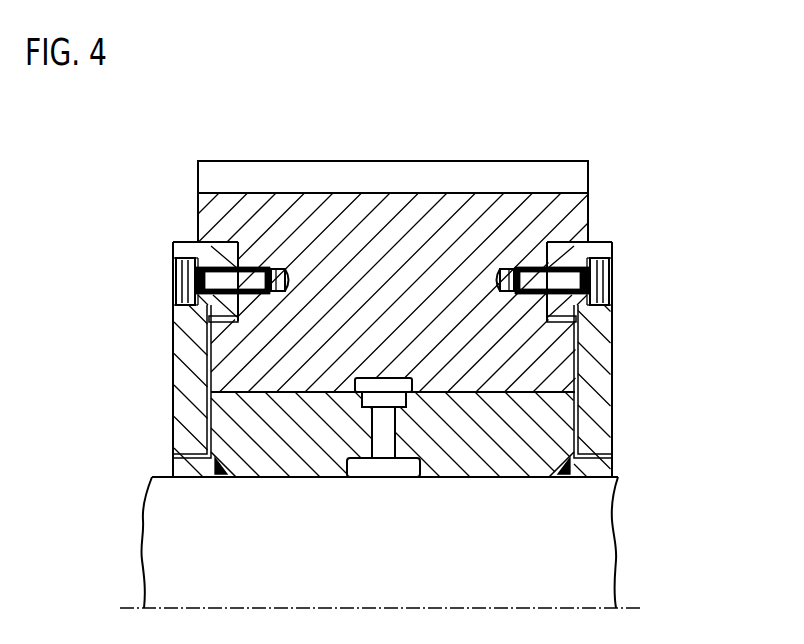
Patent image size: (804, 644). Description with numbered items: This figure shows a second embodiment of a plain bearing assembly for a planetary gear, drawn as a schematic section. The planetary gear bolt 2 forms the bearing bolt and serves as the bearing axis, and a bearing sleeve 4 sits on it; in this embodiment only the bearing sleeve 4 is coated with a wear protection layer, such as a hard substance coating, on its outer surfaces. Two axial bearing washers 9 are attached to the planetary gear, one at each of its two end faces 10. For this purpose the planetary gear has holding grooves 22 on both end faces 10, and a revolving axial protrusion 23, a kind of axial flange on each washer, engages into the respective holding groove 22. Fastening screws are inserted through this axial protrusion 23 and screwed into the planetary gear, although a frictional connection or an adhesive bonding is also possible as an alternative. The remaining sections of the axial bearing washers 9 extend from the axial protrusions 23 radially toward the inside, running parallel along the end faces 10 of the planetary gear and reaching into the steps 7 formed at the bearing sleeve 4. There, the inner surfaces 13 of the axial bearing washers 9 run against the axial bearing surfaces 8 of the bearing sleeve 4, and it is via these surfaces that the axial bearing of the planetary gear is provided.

The planetary gear bolt 2 is at (578, 553).
The bearing sleeve 4 is at (323, 462).
The step 7 is at (219, 458).
The axial bearing surface 8 is at (234, 455).
The axial bearing washer 9 is at (188, 348).
The end face 10 is at (197, 229).
The inner surface 13 is at (204, 410).
The holding groove 22 is at (243, 253).
The axial protrusion 23 is at (210, 257).